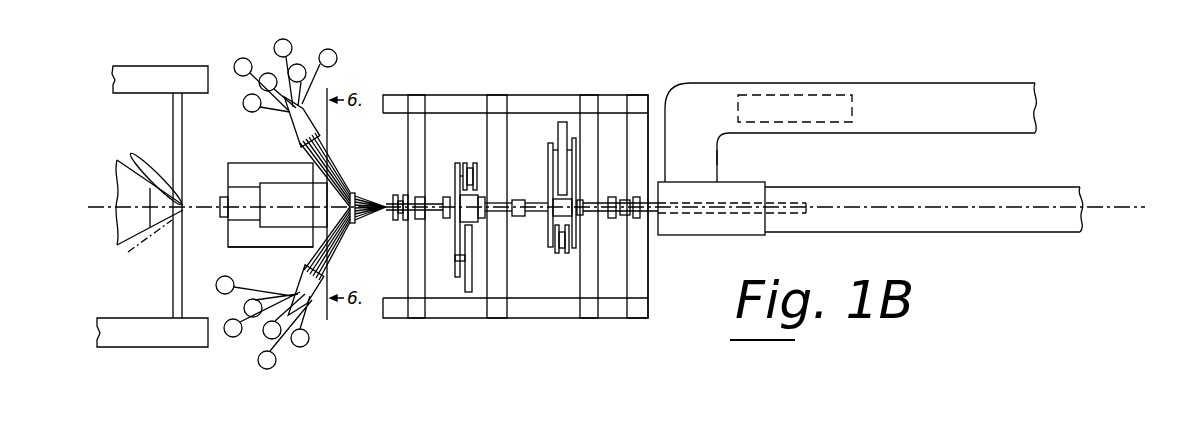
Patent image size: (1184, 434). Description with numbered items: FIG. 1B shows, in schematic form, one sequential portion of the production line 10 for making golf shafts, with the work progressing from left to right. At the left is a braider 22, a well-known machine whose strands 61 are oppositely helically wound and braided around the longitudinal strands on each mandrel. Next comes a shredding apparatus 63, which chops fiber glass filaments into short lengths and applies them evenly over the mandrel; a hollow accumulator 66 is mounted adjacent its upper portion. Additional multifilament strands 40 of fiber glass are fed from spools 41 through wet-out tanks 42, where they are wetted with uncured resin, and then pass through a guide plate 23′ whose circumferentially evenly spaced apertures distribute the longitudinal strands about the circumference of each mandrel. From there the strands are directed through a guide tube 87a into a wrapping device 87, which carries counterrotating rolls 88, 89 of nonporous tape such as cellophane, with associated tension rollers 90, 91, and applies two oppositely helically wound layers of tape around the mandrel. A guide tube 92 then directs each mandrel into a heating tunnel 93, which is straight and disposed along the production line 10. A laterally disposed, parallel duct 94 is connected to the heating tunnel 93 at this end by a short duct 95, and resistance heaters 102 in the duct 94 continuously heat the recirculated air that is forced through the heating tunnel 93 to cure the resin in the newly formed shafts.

The production line 10 is at (1102, 207).
The braider 22 is at (118, 180).
The distributor plate 23′ is at (360, 195).
The multifilament strands 40 is at (333, 158).
The spools 41 is at (335, 55).
The wet-out tanks 42 is at (290, 134).
The strands 61 is at (138, 162).
The shredding apparatus 63 is at (237, 163).
The hollow accumulator 66 is at (245, 238).
The wrapping device 87 is at (452, 95).
The guide tube 87a is at (405, 220).
The roll 88 is at (468, 292).
The roll 89 is at (562, 122).
The tension roller 90 is at (468, 163).
The tension roller 91 is at (560, 253).
The guide tube 92 is at (720, 236).
The heating tunnel 93 is at (993, 232).
The duct 94 is at (940, 93).
The short duct 95 is at (708, 157).
The resistance heaters 102 is at (798, 93).